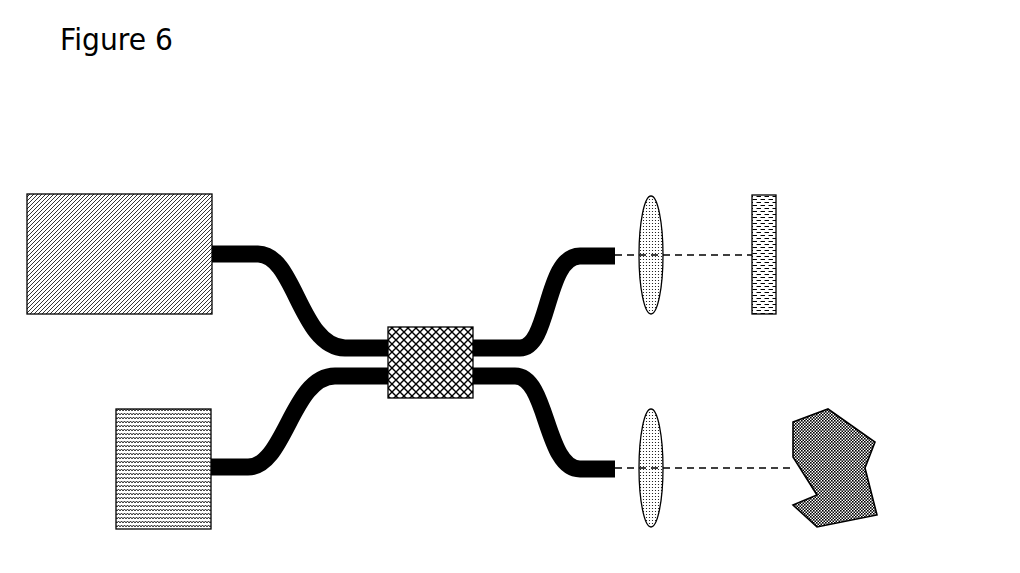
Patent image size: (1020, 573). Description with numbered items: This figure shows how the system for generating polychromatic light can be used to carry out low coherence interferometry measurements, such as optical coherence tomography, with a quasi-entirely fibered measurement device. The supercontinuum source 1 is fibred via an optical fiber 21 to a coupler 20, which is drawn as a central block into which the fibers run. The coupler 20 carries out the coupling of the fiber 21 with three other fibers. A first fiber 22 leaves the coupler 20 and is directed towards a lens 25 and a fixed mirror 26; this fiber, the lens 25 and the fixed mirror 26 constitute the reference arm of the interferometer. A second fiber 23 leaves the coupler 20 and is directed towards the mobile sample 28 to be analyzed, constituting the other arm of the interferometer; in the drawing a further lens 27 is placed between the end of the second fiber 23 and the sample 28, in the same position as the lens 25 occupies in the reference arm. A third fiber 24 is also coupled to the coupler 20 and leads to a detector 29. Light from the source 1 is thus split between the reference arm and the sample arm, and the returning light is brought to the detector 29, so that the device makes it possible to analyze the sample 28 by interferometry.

The supercontinuum source 1 is at (104, 212).
The coupler 20 is at (426, 336).
The optical fiber 21 is at (282, 256).
The first fiber 22 is at (562, 262).
The second fiber 23 is at (553, 463).
The third fiber 24 is at (285, 457).
The lens 25 is at (651, 207).
The fixed mirror 26 is at (765, 205).
The sample arm lens 27 is at (651, 422).
The sample 28 is at (842, 432).
The detector 29 is at (145, 422).